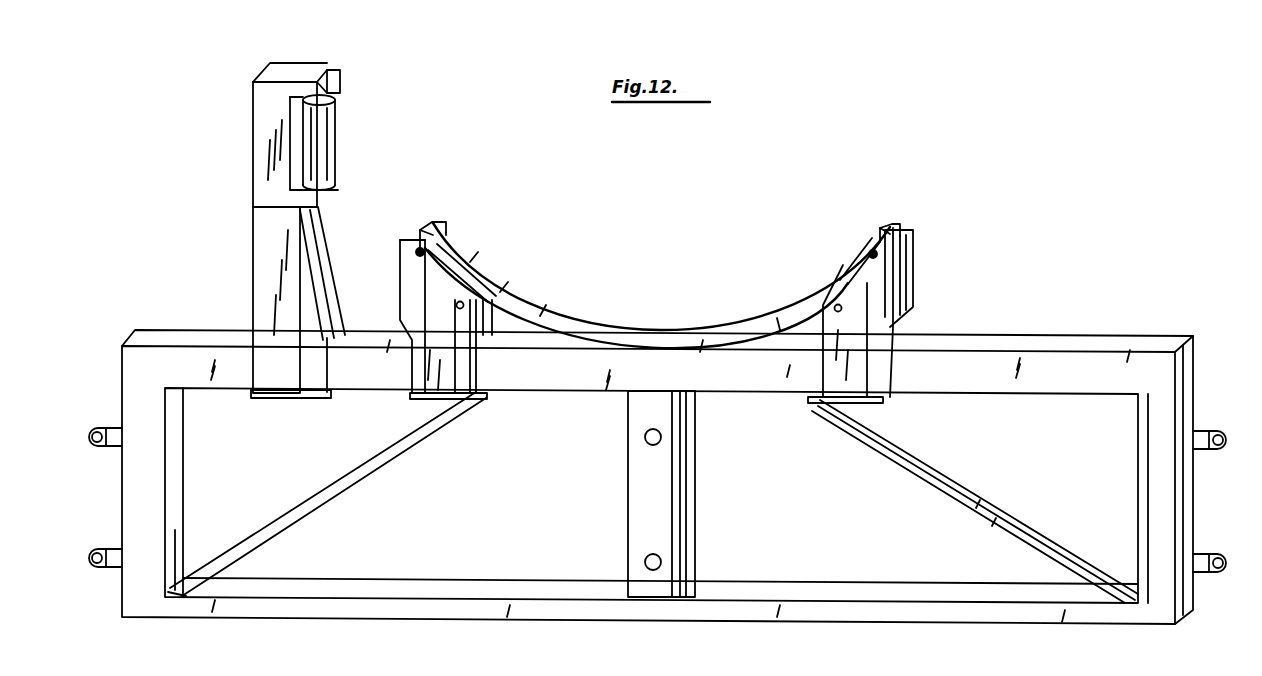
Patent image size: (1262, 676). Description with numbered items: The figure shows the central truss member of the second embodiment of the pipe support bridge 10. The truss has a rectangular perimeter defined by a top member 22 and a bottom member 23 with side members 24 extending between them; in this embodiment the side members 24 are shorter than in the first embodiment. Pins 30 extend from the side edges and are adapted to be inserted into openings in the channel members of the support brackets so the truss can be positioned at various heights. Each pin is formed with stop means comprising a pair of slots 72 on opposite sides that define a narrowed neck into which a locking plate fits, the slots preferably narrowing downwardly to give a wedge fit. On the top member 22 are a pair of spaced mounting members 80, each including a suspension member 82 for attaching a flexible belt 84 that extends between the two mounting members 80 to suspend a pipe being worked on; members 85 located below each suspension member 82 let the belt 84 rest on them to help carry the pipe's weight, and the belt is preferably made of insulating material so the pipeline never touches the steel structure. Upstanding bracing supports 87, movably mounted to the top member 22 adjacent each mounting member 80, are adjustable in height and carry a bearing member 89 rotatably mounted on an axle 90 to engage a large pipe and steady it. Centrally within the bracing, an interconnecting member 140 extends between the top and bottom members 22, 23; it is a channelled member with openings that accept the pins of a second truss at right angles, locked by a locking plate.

The pipe support bridge 10 is at (1022, 290).
The top member 22 is at (986, 380).
The bottom member 23 is at (826, 585).
The side members 24 is at (183, 490).
The pins 30 is at (113, 428).
The slots 72 is at (100, 450).
The mounting members 80 is at (486, 405).
The suspension member 82 is at (437, 225).
The flexible belt 84 is at (616, 322).
The members 85 is at (510, 292).
The upstanding bracing supports 87 is at (258, 270).
The bearing member 89 is at (330, 150).
The axle 90 is at (322, 70).
The interconnecting member 140 is at (672, 516).